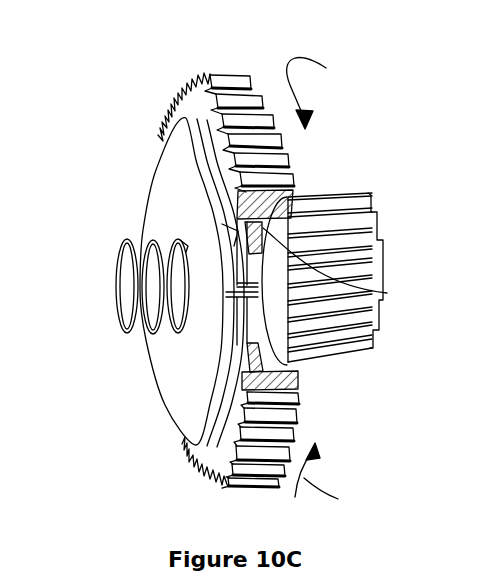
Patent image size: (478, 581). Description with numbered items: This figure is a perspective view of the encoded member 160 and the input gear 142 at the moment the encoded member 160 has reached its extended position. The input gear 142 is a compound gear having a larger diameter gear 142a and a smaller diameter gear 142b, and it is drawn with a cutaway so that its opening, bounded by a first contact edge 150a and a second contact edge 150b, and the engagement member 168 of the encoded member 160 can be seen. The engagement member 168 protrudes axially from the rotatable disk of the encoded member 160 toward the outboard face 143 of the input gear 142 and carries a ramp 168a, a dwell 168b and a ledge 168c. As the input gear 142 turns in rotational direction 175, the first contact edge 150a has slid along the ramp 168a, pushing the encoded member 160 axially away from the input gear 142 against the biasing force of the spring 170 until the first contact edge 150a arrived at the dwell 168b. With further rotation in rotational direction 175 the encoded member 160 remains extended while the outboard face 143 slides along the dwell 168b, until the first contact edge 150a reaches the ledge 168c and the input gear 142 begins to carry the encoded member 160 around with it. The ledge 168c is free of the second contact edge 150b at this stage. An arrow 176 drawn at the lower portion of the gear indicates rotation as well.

The input gear 142 is at (168, 110).
The larger diameter gear 142a is at (218, 73).
The smaller diameter gear 142b is at (358, 352).
The outboard face 143 is at (204, 462).
The first contact edge 150a is at (297, 217).
The second contact edge 150b is at (250, 300).
The encoded member 160 is at (187, 403).
The engagement member 168 is at (345, 320).
The ramp 168a is at (250, 233).
The dwell 168b is at (288, 256).
The ledge 168c is at (340, 296).
The spring 170 is at (115, 274).
The rotational direction 175 is at (329, 88).
The rotation direction arrow 176 is at (340, 477).